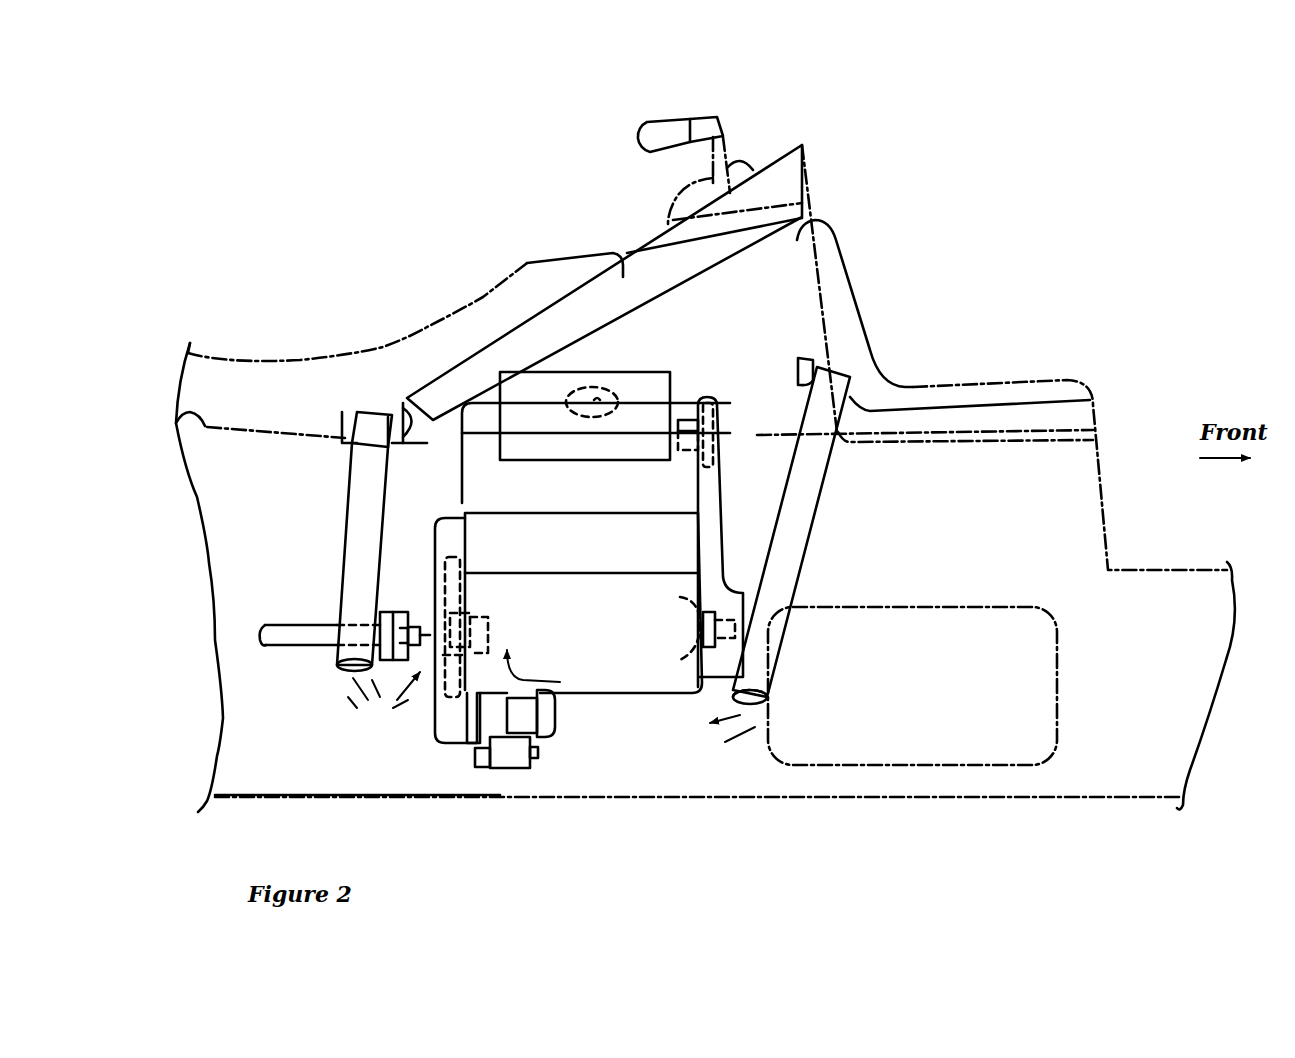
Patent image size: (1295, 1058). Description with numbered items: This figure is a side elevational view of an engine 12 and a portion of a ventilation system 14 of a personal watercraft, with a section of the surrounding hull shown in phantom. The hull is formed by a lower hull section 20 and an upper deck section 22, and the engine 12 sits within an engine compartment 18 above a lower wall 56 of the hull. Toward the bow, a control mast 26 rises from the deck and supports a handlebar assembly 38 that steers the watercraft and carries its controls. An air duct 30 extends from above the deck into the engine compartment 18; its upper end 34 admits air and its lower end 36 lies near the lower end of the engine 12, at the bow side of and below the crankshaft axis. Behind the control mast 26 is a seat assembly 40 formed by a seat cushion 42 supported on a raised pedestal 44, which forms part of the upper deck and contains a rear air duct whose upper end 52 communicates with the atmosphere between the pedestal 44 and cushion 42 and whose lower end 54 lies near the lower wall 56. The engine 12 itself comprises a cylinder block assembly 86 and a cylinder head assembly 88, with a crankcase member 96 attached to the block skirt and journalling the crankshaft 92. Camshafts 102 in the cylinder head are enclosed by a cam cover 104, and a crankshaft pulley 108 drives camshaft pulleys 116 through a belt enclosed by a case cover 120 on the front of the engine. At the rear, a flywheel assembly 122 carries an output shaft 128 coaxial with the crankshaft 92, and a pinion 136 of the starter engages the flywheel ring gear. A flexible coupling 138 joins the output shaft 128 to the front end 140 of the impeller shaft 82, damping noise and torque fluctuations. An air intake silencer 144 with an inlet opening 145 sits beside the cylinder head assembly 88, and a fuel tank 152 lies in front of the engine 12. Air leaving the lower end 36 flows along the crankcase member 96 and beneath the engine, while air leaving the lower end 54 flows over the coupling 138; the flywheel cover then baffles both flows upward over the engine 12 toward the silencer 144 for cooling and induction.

The engine 12 is at (657, 392).
The ventilation system 14 is at (350, 500).
The engine compartment 18 is at (758, 780).
The lower hull section 20 is at (1025, 802).
The upper deck section 22 is at (1070, 363).
The control mast 26 is at (800, 200).
The air duct 30 is at (818, 515).
The upper end of the air duct 34 is at (827, 388).
The lower end of the air duct 36 is at (760, 707).
The handlebar assembly 38 is at (727, 137).
The seat assembly 40 is at (303, 330).
The seat cushion 42 is at (483, 297).
The raised pedestal 44 is at (183, 400).
The upper end of the rear air duct 52 is at (377, 390).
The lower end of the rear air duct 54 is at (347, 673).
The lower wall of the hull 56 is at (607, 785).
The impeller shaft 82 is at (272, 625).
The cylinder block assembly 86 is at (677, 542).
The cylinder head assembly 88 is at (492, 476).
The crankshaft 92 is at (480, 608).
The crankcase member 96 is at (658, 685).
The camshafts 102 is at (680, 422).
The cam cover 104 is at (600, 400).
The crankshaft pulley 108 is at (710, 645).
The camshaft pulley 116 is at (713, 423).
The case cover 120 is at (723, 497).
The flywheel assembly 122 is at (430, 697).
The output shaft 128 is at (433, 623).
The pinion 136 is at (555, 715).
The flexible coupling 138 is at (383, 607).
The front end of the impeller shaft 140 is at (297, 647).
The air intake silencer 144 is at (627, 370).
The inlet opening 145 is at (580, 387).
The fuel tank 152 is at (1058, 664).